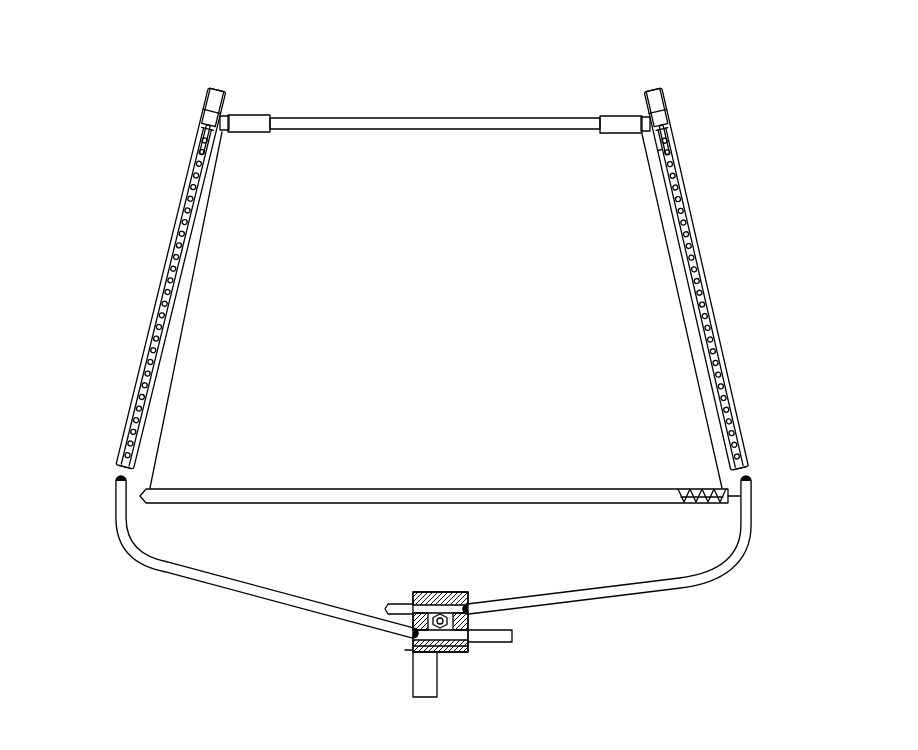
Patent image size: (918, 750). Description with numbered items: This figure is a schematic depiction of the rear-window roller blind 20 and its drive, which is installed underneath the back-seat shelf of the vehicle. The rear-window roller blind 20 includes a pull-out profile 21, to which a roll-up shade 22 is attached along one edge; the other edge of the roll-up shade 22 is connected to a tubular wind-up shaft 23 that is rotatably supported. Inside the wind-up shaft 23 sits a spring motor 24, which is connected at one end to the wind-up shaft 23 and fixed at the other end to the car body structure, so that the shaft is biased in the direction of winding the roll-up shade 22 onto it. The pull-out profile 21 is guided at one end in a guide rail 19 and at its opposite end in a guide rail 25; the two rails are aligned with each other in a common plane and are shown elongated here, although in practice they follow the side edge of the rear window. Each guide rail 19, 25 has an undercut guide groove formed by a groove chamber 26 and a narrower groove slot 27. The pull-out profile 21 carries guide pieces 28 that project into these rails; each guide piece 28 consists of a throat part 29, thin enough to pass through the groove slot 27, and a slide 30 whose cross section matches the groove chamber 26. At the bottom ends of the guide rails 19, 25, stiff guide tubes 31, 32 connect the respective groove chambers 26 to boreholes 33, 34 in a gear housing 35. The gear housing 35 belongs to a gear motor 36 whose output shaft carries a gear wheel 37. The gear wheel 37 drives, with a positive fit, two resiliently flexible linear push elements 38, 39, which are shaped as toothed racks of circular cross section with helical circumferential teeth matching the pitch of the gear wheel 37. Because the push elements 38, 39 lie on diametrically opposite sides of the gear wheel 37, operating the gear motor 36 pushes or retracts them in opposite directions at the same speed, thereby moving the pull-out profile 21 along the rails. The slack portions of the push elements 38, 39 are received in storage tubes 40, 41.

The guide rail 19 is at (152, 205).
The rear-window roller blind 20 is at (170, 98).
The pull-out profile 21 is at (431, 118).
The roll-up shade 22 is at (462, 291).
The wind-up shaft 23 is at (335, 495).
The spring motor 24 is at (717, 487).
The guide rail 25 is at (742, 405).
The groove chamber 26 is at (657, 107).
The groove slot 27 is at (658, 111).
The guide piece 28 is at (236, 114).
The throat part 29 is at (664, 140).
The slide 30 is at (660, 149).
The guide tube 31 is at (627, 590).
The guide tube 32 is at (233, 588).
The borehole 33 is at (458, 592).
The borehole 34 is at (455, 654).
The gear housing 35 is at (463, 655).
The gear motor 36 is at (406, 648).
The gear wheel 37 is at (428, 592).
The push element 38 is at (700, 299).
The push element 39 is at (167, 260).
The storage tube 40 is at (388, 604).
The storage tube 41 is at (512, 636).